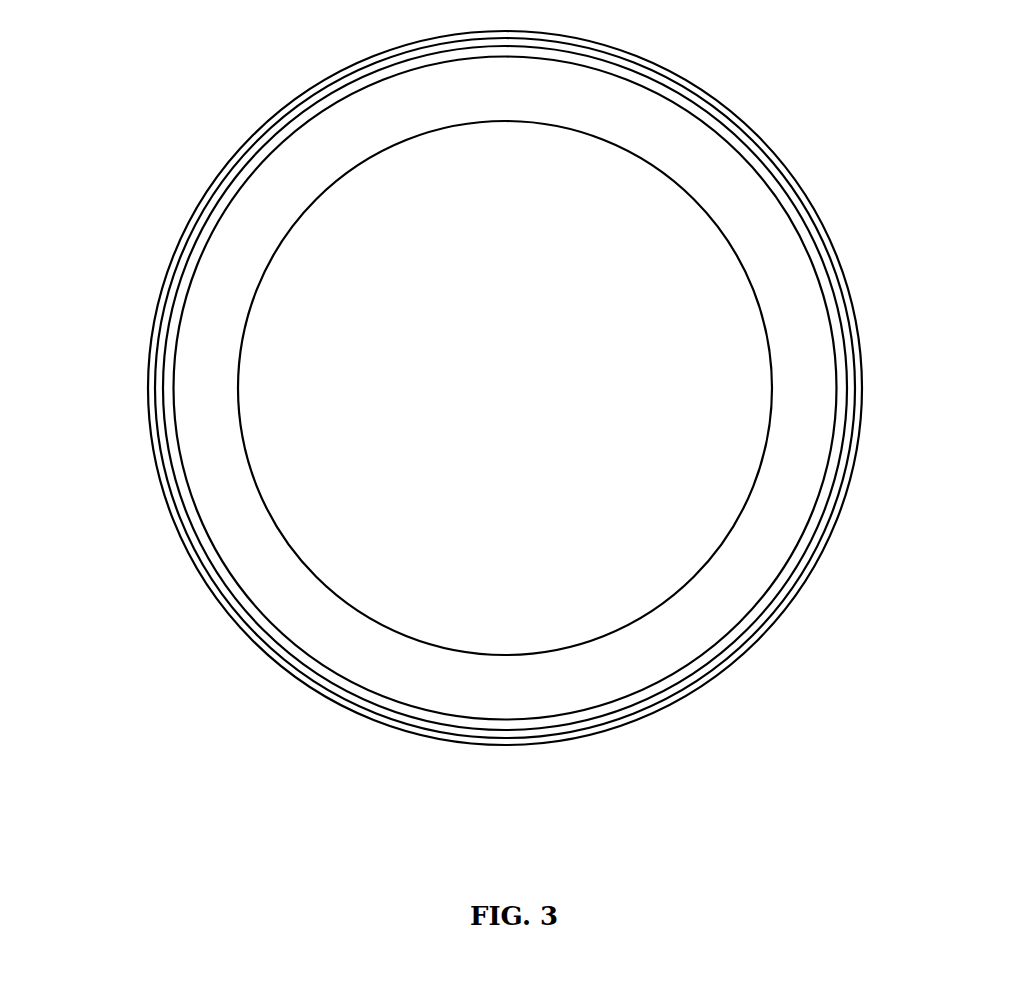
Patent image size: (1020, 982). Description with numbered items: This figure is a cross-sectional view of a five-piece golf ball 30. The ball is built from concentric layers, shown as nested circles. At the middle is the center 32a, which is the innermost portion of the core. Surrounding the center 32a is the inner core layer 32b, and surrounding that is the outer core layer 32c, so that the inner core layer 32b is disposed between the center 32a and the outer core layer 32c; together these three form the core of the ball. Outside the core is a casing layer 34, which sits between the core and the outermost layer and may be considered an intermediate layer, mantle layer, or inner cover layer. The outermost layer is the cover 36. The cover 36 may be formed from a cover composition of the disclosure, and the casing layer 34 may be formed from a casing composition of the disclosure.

The five-piece golf ball 30 is at (503, 432).
The center 32a is at (774, 453).
The inner core layer 32b is at (268, 620).
The outer core layer 32c is at (833, 492).
The casing layer 34 is at (752, 640).
The cover 36 is at (646, 724).